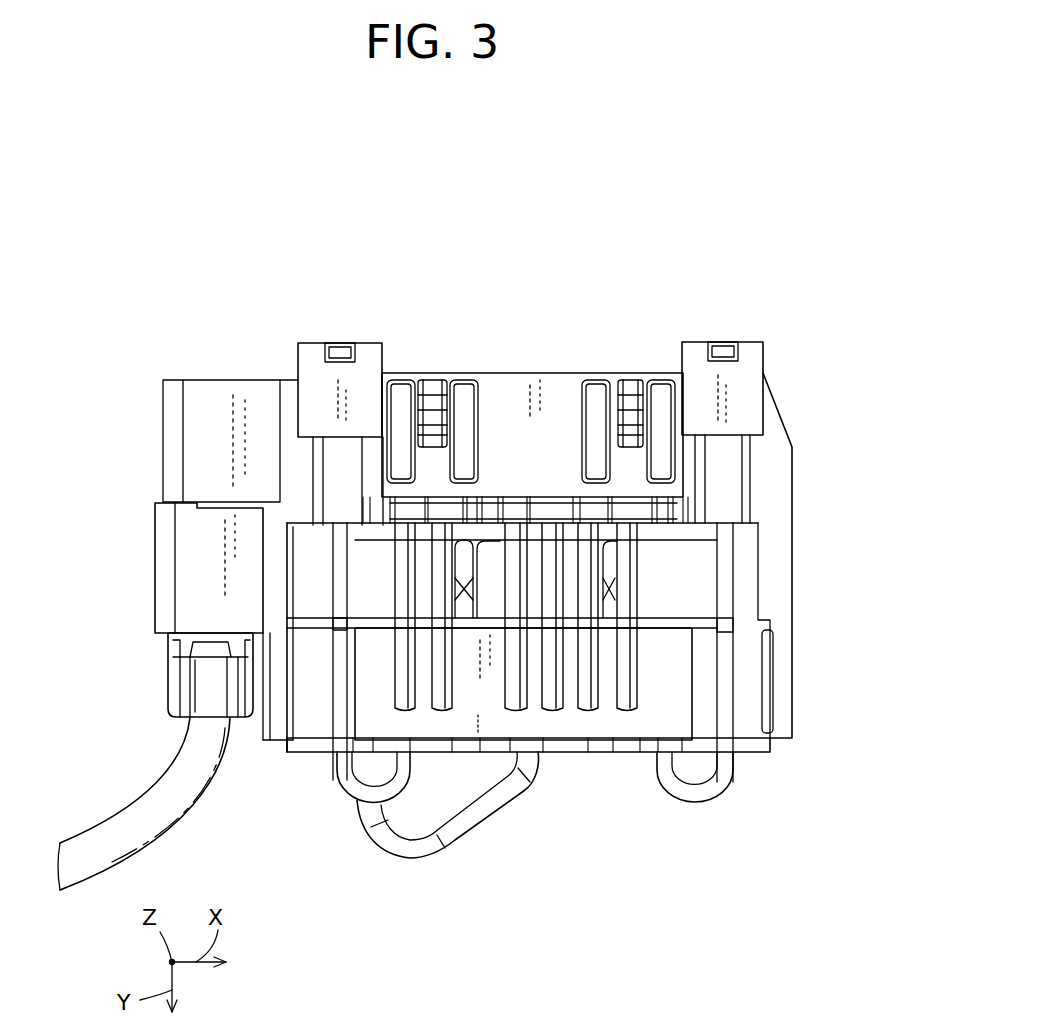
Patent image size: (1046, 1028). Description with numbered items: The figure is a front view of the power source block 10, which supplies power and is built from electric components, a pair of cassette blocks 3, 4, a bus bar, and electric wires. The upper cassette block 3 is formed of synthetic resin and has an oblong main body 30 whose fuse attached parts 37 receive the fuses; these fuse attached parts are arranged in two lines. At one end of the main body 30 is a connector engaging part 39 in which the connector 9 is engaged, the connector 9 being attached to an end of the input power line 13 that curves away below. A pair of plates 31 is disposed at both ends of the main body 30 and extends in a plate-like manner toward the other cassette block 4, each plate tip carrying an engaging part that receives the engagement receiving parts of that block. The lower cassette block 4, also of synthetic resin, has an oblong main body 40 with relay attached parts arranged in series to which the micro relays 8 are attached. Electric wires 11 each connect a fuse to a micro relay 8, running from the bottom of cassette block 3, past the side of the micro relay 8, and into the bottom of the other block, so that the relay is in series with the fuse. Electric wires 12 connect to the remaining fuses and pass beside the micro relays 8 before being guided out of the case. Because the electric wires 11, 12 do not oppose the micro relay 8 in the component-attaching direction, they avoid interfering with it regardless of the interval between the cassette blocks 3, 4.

The power source block 10 is at (752, 295).
The cassette block 3 is at (567, 368).
The main body 30 is at (628, 368).
The fuse attached part 37 is at (368, 357).
The micro relay 8 is at (680, 540).
The plate 31 is at (780, 548).
The connector engaging part 39 is at (163, 555).
The connector 9 is at (168, 665).
The input power line 13 is at (137, 825).
The electric wire 12 is at (515, 652).
The cassette block 4 is at (604, 745).
The main body 40 is at (638, 730).
The electric wire 11 is at (357, 790).